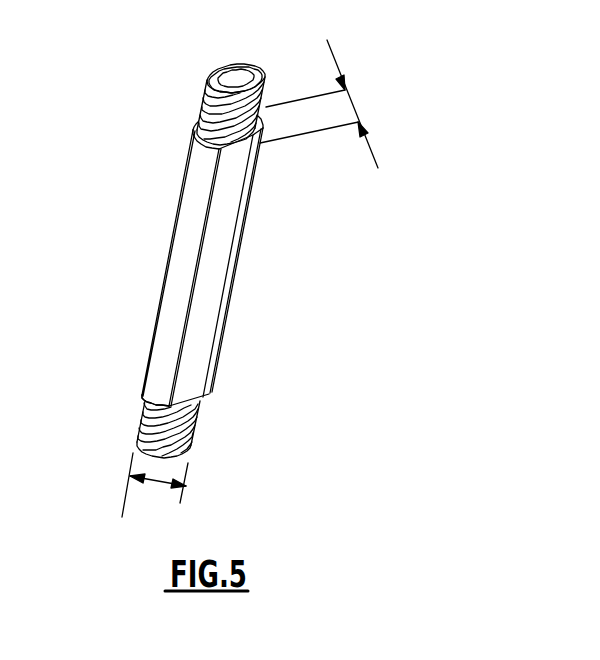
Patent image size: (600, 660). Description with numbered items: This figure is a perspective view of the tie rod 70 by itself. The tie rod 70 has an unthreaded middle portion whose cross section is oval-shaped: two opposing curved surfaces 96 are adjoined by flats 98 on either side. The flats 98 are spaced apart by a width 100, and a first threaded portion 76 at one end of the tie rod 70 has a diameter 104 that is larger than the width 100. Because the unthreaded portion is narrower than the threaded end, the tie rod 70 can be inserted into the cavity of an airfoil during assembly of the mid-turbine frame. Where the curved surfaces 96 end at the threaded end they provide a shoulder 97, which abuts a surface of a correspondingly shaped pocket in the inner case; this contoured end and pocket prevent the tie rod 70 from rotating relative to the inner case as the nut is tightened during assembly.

The tie rod 70 is at (259, 196).
The first threaded portion 76 is at (192, 427).
The curved surfaces 96 is at (175, 260).
The shoulder 97 is at (143, 415).
The flats 98 is at (218, 285).
The width 100 is at (356, 105).
The diameter 104 is at (188, 483).